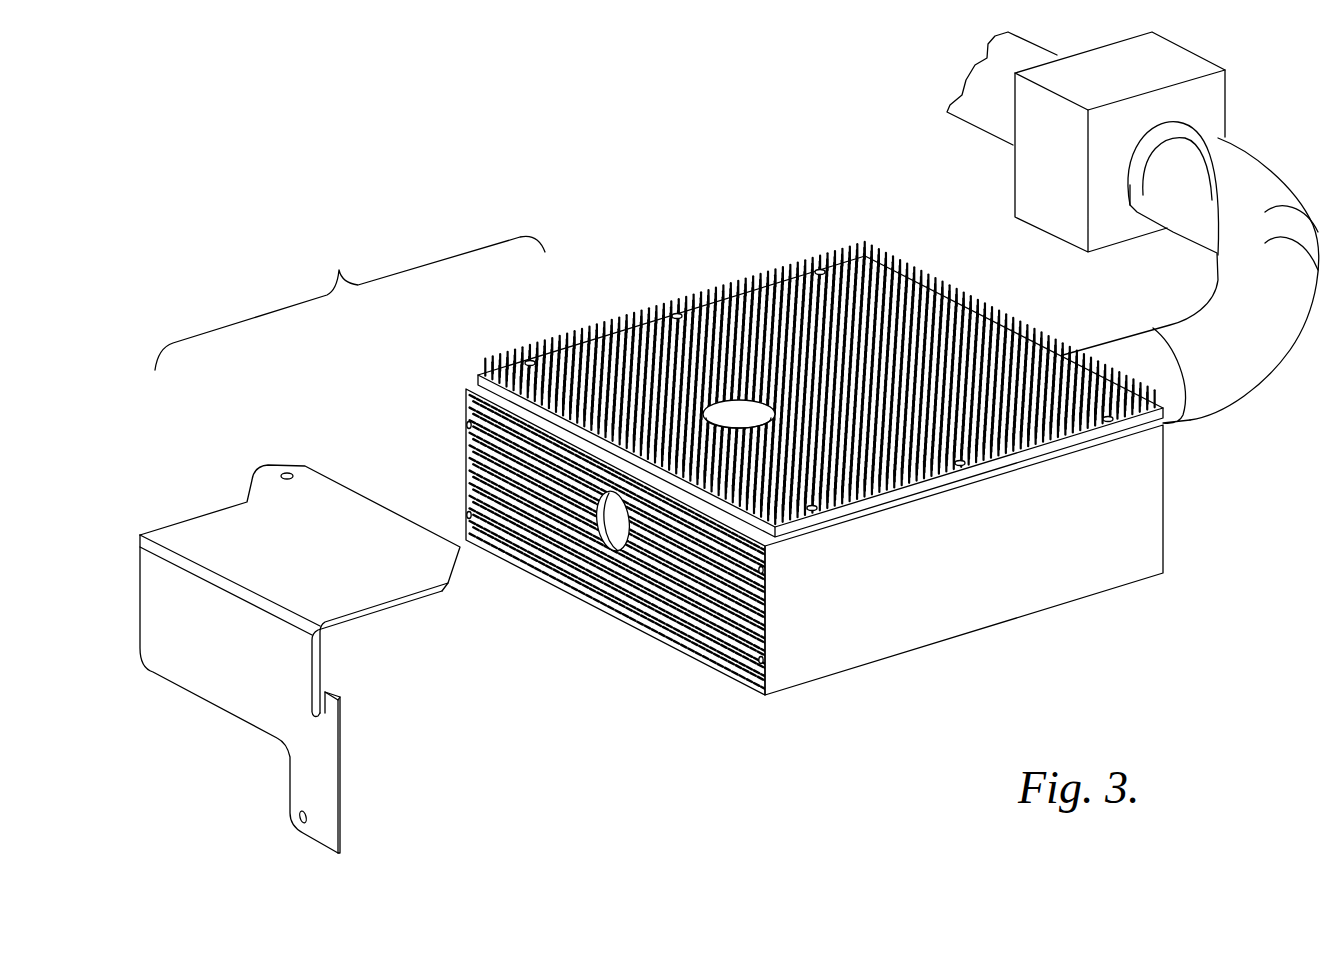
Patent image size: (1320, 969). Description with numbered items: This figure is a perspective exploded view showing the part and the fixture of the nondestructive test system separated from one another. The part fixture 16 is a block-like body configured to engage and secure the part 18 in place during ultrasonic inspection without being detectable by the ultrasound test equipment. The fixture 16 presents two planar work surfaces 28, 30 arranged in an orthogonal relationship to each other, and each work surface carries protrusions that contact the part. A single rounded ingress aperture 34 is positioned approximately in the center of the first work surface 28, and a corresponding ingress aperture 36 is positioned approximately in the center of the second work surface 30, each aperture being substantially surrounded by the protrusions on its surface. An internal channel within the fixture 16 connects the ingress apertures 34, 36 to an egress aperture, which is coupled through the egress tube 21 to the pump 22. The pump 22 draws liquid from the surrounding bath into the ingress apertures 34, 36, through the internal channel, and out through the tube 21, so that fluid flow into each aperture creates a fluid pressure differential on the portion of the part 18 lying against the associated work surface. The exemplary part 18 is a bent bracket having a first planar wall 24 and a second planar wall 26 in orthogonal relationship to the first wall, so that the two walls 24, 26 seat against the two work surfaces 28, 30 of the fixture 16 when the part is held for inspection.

The part fixture 16 is at (1114, 607).
The part 18 is at (195, 532).
The egress tube 21 is at (1200, 325).
The pump 22 is at (1035, 200).
The first planar wall 24 is at (358, 586).
The second planar wall 26 is at (205, 677).
The planar work surface 28 is at (594, 340).
The planar work surface 30 is at (465, 440).
The ingress aperture 34 is at (743, 414).
The ingress aperture 36 is at (623, 530).